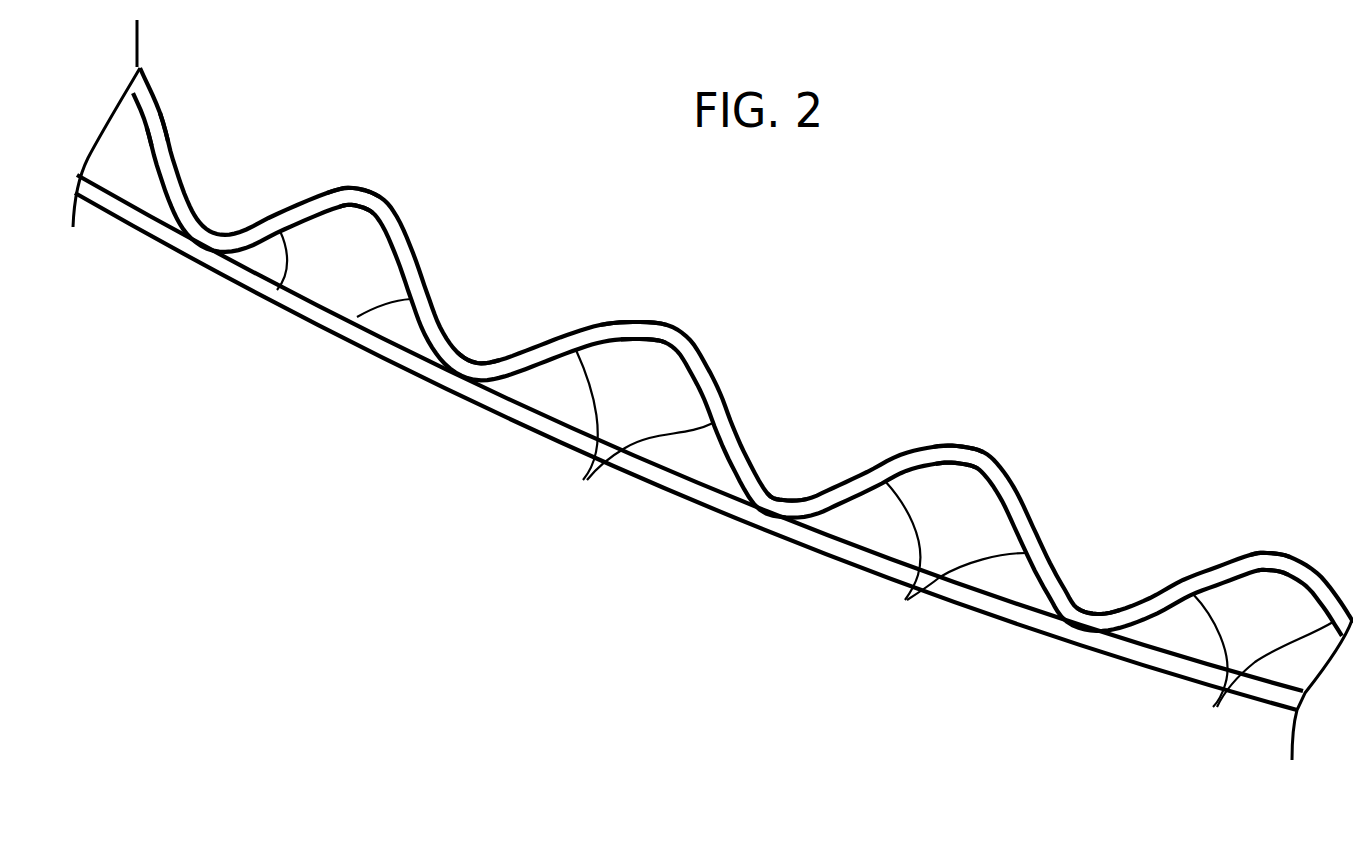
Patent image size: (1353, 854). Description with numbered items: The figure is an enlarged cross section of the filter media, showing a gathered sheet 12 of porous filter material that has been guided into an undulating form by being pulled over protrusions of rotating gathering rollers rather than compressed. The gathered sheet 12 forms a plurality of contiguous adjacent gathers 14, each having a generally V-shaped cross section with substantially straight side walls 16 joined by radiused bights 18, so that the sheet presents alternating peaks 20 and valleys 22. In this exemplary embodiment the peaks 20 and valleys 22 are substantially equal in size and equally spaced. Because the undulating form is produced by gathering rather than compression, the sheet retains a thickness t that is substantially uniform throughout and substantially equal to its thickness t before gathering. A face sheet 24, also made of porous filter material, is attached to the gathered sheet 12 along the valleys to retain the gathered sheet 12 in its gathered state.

The gathered sheet 12 is at (713, 390).
The gathers 14 is at (418, 261).
The side walls 16 is at (278, 289).
The radiused bights 18 is at (383, 199).
The peaks 20 is at (362, 210).
The valleys 22 is at (480, 361).
The face sheet 24 is at (227, 278).
The thickness t is at (103, 148).